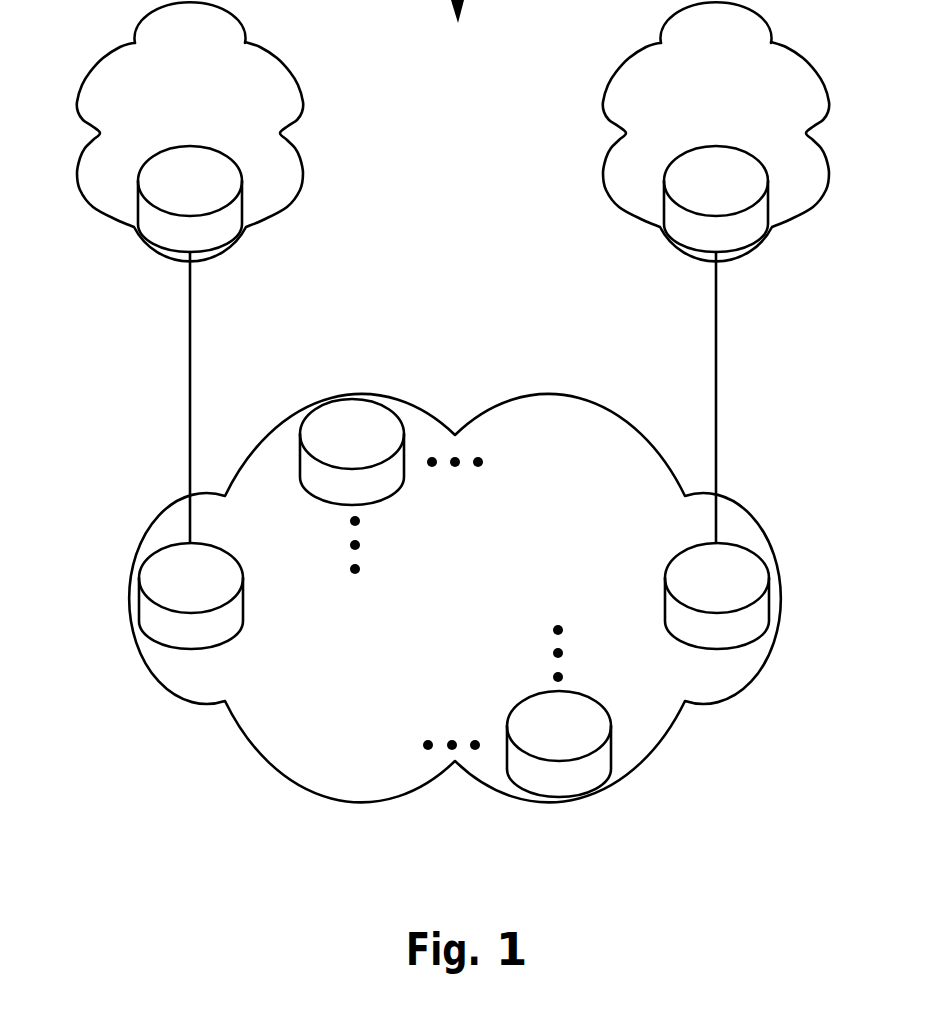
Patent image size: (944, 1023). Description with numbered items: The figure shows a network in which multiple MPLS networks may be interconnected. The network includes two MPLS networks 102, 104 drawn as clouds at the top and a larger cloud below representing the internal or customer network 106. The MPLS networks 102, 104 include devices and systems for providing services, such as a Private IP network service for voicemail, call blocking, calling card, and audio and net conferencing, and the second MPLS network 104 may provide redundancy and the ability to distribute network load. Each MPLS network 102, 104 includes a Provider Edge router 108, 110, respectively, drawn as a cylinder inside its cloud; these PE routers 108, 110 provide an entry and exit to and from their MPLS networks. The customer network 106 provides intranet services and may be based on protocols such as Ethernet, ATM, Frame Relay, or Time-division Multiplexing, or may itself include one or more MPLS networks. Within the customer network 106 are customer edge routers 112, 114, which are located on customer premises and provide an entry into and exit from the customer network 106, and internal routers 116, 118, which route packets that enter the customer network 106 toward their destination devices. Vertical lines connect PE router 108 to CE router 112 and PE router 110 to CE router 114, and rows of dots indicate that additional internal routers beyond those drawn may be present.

The MPLS network 102 is at (280, 133).
The MPLS network 104 is at (627, 133).
The customer network 106 is at (455, 436).
The provider edge router 108 is at (242, 199).
The provider edge router 110 is at (664, 199).
The customer edge router 112 is at (139, 596).
The customer edge router 114 is at (769, 596).
The internal router 116 is at (353, 399).
The internal router 118 is at (559, 797).